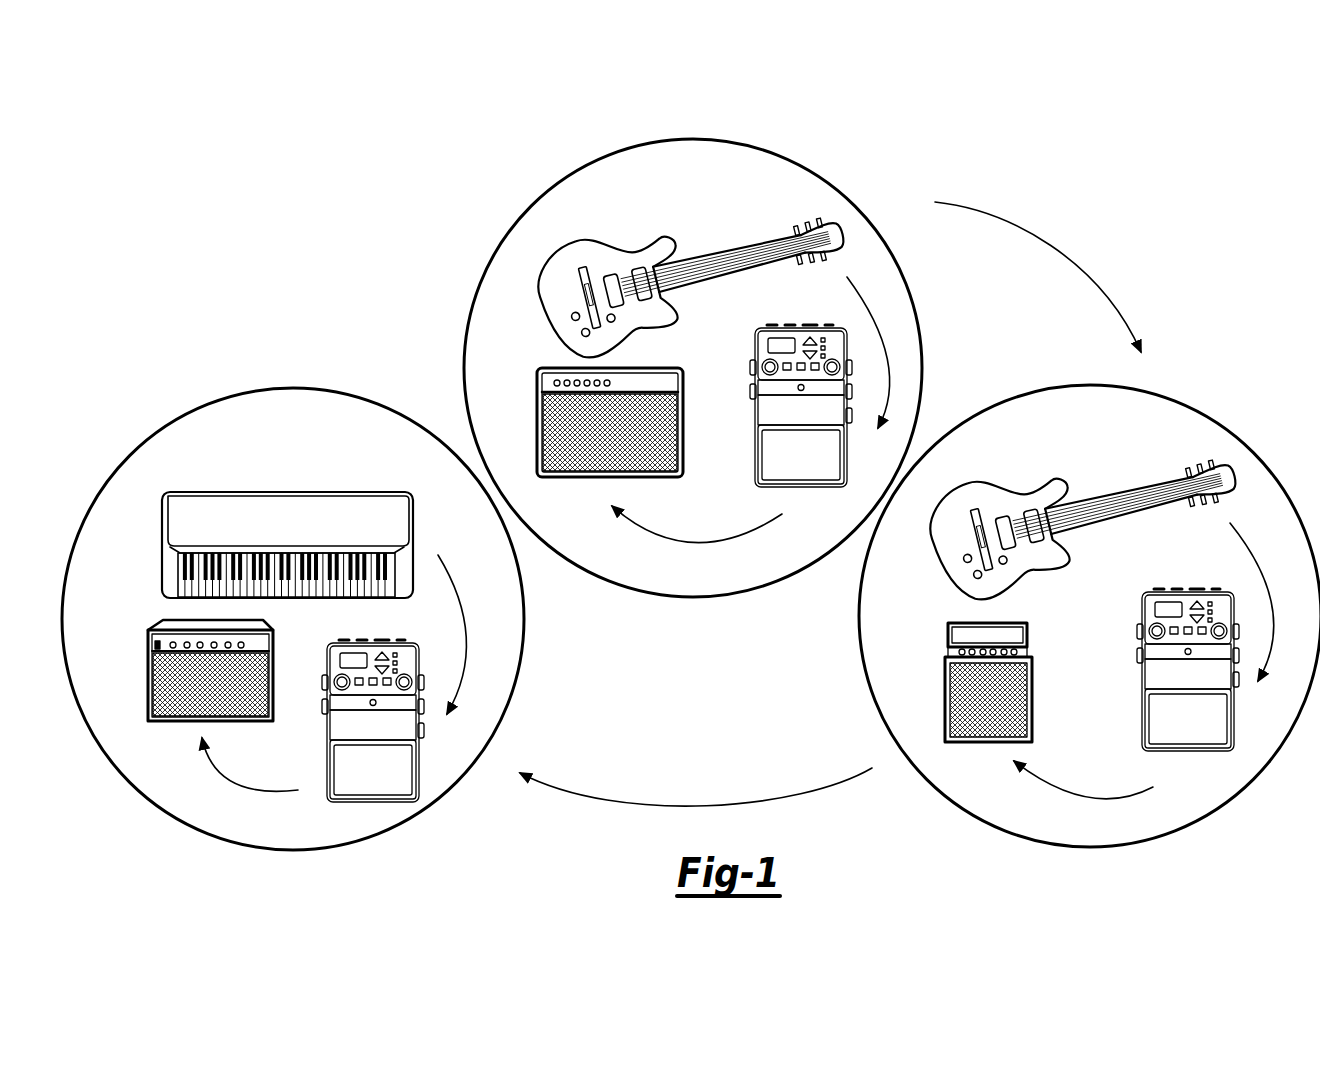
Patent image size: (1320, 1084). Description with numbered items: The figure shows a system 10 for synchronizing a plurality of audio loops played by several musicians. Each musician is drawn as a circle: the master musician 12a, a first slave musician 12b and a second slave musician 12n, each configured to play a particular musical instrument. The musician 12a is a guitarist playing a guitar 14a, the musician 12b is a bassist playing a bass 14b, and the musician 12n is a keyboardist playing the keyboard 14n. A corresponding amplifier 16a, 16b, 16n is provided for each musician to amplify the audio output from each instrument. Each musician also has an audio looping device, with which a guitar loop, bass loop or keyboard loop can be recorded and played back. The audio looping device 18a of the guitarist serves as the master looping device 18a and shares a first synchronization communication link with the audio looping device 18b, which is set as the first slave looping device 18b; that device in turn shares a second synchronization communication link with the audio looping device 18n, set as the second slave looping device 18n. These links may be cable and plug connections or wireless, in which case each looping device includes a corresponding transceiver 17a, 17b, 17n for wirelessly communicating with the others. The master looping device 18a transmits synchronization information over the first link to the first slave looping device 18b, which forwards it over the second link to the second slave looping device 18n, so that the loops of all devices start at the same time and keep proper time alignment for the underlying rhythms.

The system 10 is at (792, 118).
The musician 12a is at (691, 138).
The musician 12b is at (1058, 386).
The musician 12n is at (293, 388).
The musical instrument 14a is at (566, 246).
The musical instrument 14b is at (940, 565).
The keyboard 14n is at (222, 491).
The amplifier 16a is at (537, 417).
The amplifier 16b is at (943, 700).
The amplifier 16n is at (148, 673).
The transceiver 17a is at (773, 416).
The transceiver 17b is at (1163, 677).
The transceiver 17n is at (343, 724).
The master looping device 18a is at (803, 487).
The first slave looping device 18b is at (1142, 711).
The second slave looping device 18n is at (379, 804).